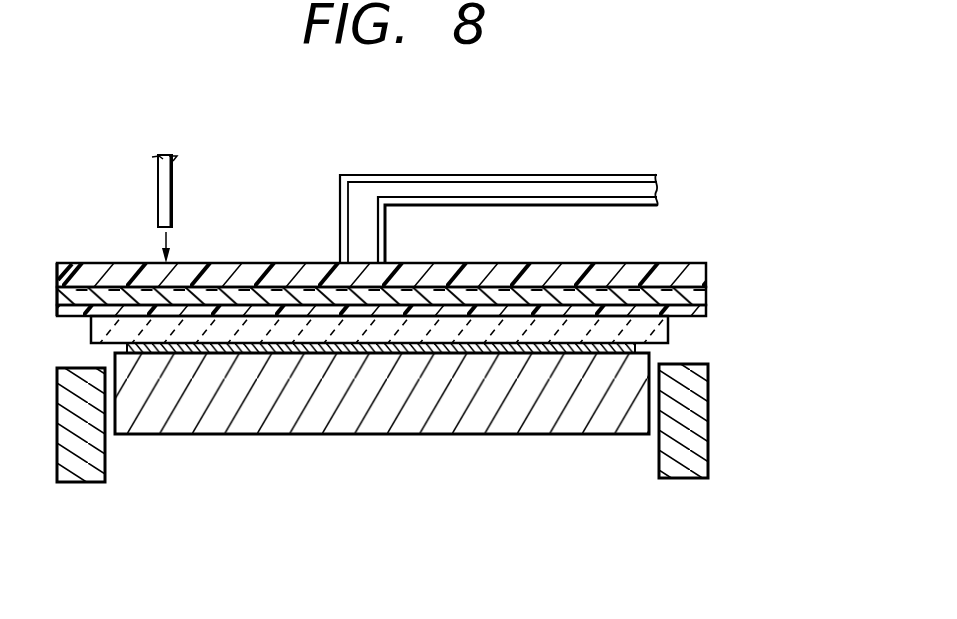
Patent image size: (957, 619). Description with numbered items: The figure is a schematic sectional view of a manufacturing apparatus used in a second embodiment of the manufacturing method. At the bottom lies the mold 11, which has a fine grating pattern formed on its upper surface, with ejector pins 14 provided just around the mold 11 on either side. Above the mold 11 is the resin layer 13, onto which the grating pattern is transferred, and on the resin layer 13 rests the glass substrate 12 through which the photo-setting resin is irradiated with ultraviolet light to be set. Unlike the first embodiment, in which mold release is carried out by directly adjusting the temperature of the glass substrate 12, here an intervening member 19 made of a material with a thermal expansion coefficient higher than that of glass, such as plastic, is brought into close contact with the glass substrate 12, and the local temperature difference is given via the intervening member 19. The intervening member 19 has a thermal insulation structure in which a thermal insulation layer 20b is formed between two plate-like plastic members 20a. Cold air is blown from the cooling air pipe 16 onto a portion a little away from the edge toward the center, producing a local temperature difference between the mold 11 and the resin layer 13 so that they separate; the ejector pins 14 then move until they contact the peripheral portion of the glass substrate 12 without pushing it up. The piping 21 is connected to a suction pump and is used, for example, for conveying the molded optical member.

The mold 11 is at (605, 425).
The glass substrate 12 is at (668, 327).
The resin layer 13 is at (648, 345).
The ejector pins 14 is at (700, 437).
The cooling air pipe 16 is at (159, 190).
The intervening member 19 is at (456, 263).
The plate-like plastic members 20a is at (663, 267).
The thermal insulation layer 20b is at (706, 290).
The piping 21 is at (593, 178).